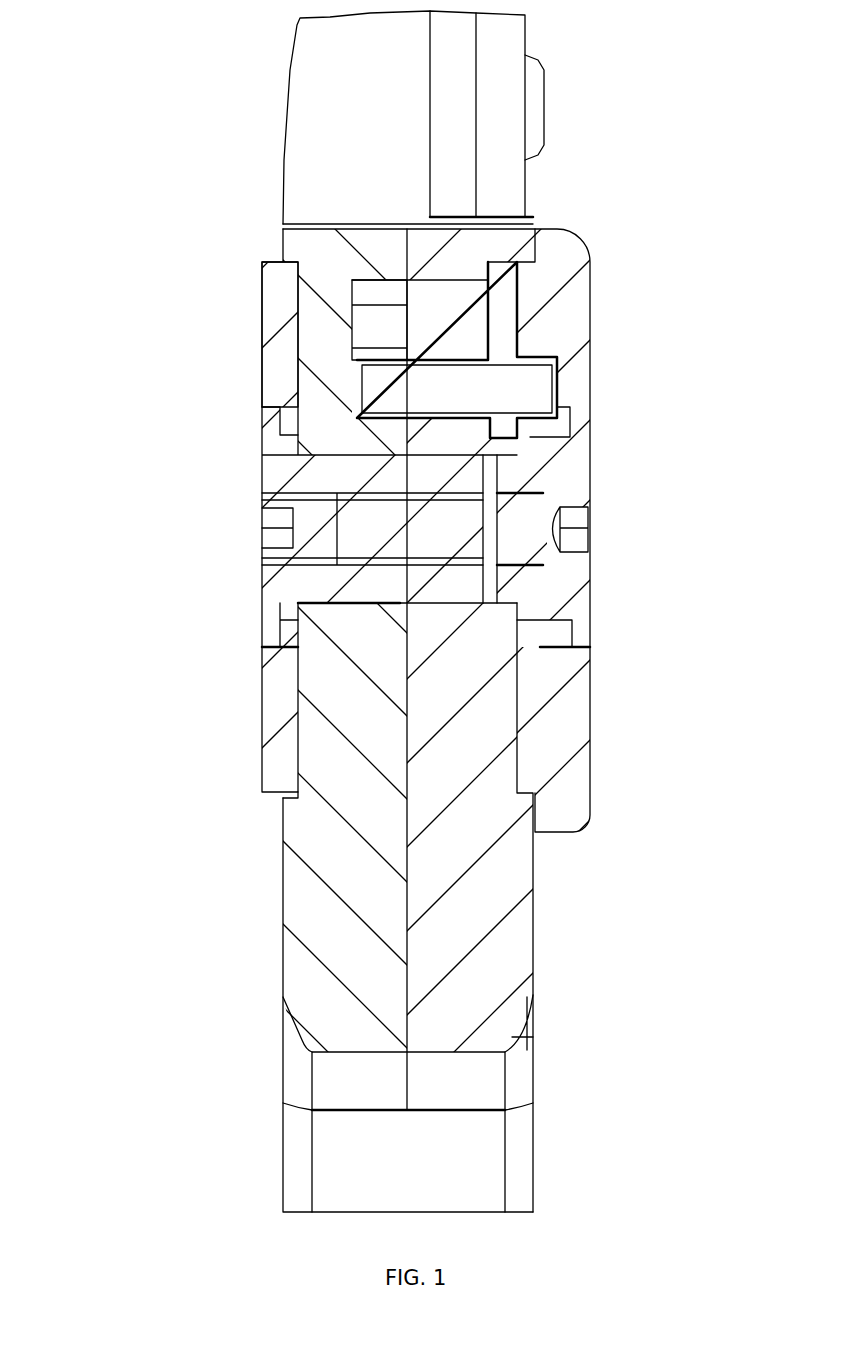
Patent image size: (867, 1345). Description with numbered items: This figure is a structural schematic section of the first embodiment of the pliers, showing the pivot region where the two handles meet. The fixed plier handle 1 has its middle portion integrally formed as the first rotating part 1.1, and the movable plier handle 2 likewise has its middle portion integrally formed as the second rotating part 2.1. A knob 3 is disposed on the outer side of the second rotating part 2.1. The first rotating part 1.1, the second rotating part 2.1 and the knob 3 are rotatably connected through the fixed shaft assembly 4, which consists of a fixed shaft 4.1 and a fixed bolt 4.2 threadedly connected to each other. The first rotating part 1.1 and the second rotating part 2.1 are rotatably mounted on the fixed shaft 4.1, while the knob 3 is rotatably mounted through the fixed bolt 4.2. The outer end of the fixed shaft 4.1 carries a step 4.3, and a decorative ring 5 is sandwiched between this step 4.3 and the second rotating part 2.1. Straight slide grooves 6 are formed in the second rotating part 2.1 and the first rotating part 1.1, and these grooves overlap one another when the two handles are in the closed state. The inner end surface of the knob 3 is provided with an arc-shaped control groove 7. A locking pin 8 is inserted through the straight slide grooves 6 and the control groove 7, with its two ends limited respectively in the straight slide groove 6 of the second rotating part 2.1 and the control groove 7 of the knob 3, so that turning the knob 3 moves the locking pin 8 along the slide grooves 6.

The fixed plier handle 1 is at (507, 1157).
The first rotating part 1.1 is at (463, 678).
The movable plier handle 2 is at (298, 1183).
The second rotating part 2.1 is at (345, 730).
The knob 3 is at (540, 650).
The fixed shaft assembly 4 is at (280, 640).
The fixed shaft 4.1 is at (283, 534).
The fixed bolt 4.2 is at (543, 495).
The step 4.3 is at (293, 473).
The decorative ring 5 is at (283, 357).
The straight slide groove 6 is at (360, 296).
The control groove 7 is at (560, 358).
The locking pin 8 is at (462, 387).